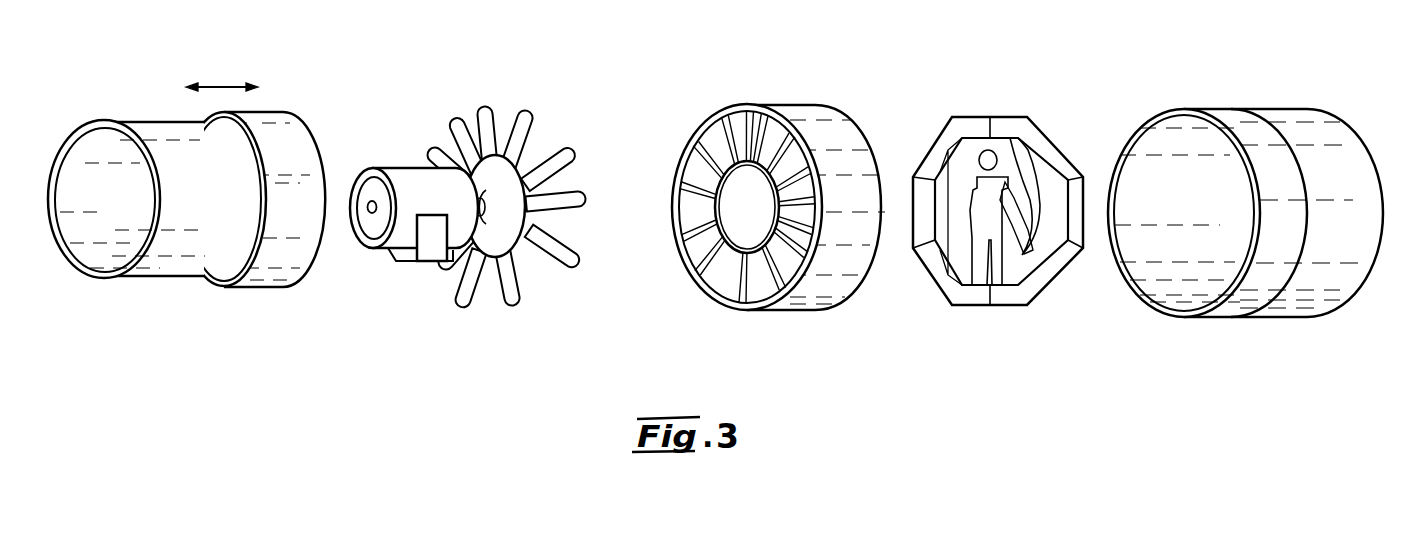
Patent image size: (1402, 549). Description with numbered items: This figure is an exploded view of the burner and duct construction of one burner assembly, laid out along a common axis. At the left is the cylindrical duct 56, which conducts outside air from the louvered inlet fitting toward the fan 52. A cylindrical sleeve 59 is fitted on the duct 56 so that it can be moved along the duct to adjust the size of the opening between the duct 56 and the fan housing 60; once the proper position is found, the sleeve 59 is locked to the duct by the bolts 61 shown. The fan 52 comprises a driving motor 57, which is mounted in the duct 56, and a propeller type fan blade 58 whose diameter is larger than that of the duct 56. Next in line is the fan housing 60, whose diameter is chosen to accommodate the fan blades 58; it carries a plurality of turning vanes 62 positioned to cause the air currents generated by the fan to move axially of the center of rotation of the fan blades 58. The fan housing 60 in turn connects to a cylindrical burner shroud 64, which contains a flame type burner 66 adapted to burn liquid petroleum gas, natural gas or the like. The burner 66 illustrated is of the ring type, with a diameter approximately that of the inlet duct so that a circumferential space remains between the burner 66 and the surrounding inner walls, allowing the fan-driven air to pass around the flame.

The cylindrical duct 56 is at (163, 274).
The cylindrical sleeve 59 is at (267, 278).
The bolts 61 is at (278, 138).
The driving motor 57 is at (390, 252).
The fan 52 is at (452, 265).
The propeller type fan blade 58 is at (470, 287).
The turning vanes 62 is at (718, 258).
The fan housing 60 is at (810, 280).
The flame type burner 66 is at (972, 296).
The cylindrical burner shroud 64 is at (1217, 310).